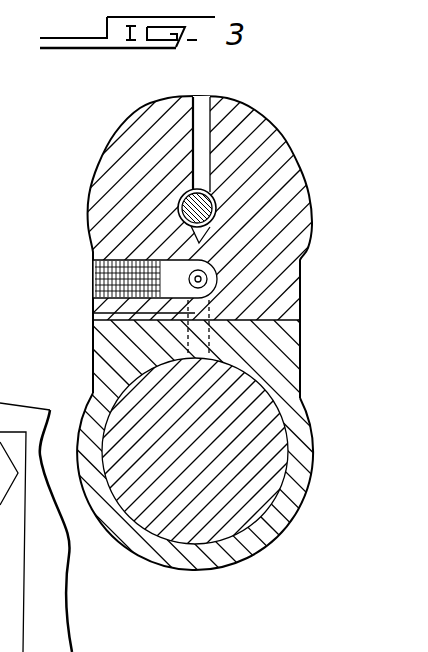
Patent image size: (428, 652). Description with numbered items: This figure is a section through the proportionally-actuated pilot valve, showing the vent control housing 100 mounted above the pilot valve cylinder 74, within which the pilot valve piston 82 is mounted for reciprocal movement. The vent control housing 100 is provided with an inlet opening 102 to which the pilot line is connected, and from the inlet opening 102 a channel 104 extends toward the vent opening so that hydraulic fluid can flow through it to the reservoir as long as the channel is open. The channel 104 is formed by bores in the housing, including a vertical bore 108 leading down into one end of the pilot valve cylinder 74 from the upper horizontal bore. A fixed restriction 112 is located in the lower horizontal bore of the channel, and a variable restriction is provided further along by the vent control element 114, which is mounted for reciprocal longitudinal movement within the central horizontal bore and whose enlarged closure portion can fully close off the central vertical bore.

The vent control housing 100 is at (92, 185).
The channel 104 is at (202, 113).
The vent control element 114 is at (213, 196).
The fixed restriction 112 is at (94, 259).
The inlet opening 102 is at (105, 283).
The vertical bore 108 is at (93, 313).
The valve cylinder 74 is at (88, 405).
The pilot valve piston 82 is at (262, 433).